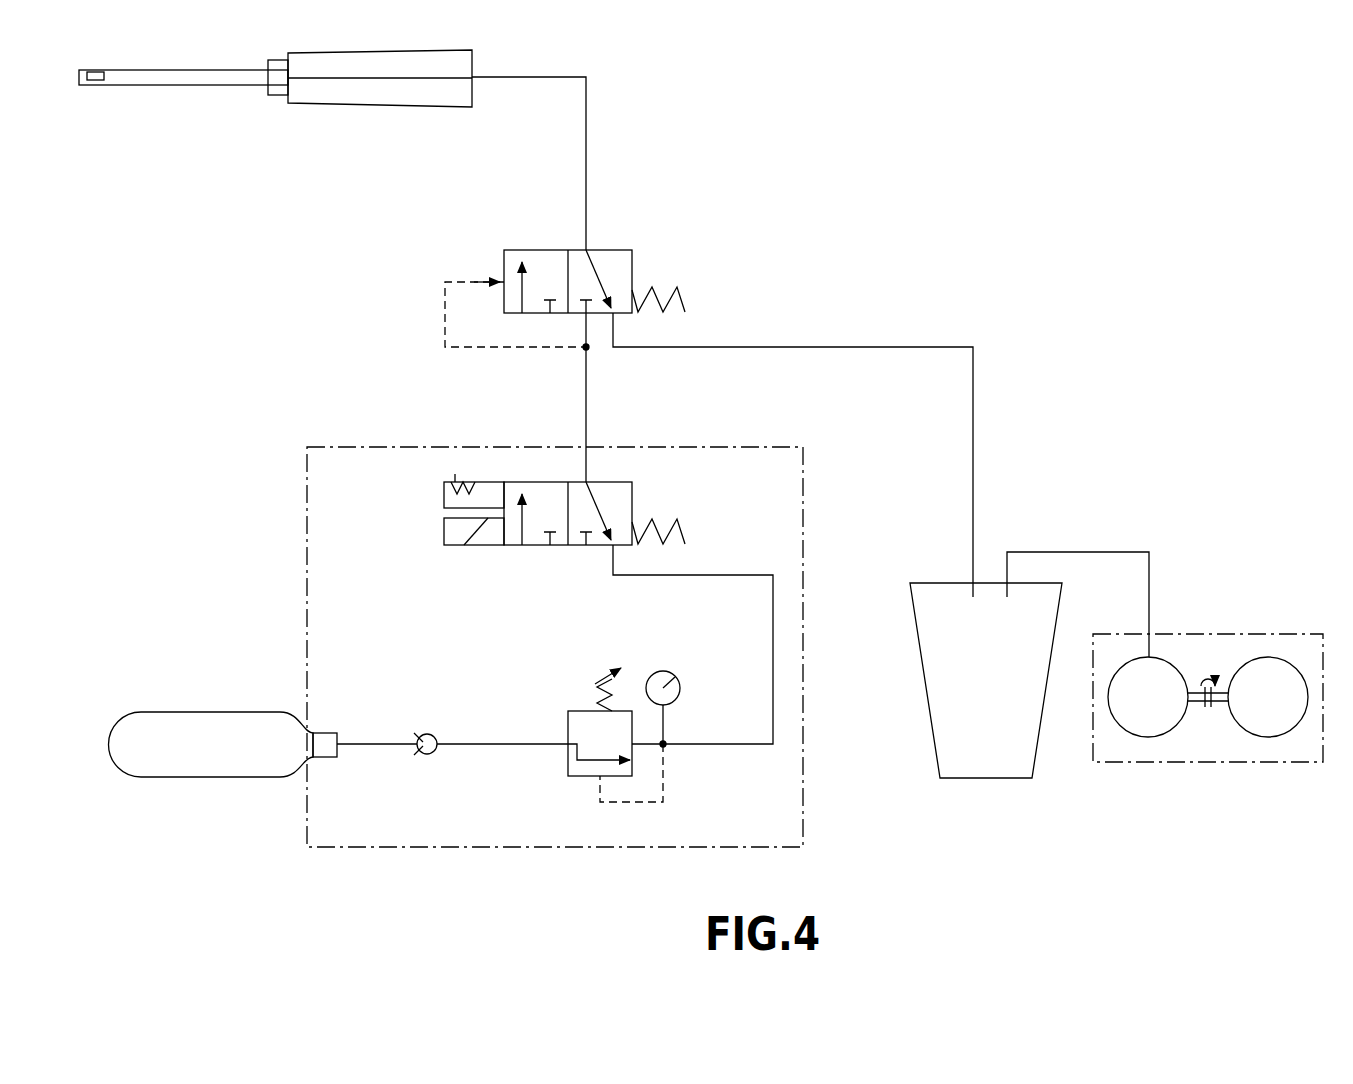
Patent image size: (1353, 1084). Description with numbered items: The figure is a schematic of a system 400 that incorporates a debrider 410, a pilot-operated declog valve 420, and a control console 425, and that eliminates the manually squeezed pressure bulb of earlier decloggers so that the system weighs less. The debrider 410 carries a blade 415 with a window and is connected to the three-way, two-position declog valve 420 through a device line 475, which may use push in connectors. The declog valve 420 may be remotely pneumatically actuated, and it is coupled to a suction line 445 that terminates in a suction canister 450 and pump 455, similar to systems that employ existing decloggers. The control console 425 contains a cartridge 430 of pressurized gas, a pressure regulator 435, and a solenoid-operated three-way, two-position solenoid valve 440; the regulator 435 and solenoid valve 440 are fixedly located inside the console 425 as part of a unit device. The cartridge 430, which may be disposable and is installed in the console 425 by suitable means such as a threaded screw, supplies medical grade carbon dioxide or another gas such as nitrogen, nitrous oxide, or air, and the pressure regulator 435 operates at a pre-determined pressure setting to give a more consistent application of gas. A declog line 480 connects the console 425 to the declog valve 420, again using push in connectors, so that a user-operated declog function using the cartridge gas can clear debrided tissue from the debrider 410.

The system 400 is at (1155, 233).
The debrider 410 is at (434, 107).
The blade 415 is at (156, 94).
The declog valve 420 is at (650, 245).
The control console 425 is at (338, 436).
The cartridge 430 is at (205, 705).
The pressure regulator 435 is at (557, 704).
The solenoid valve 440 is at (628, 476).
The suction line 445 is at (794, 343).
The suction canister 450 is at (948, 736).
The pump 455 is at (1264, 634).
The device line 475 is at (586, 108).
The declog line 480 is at (586, 392).